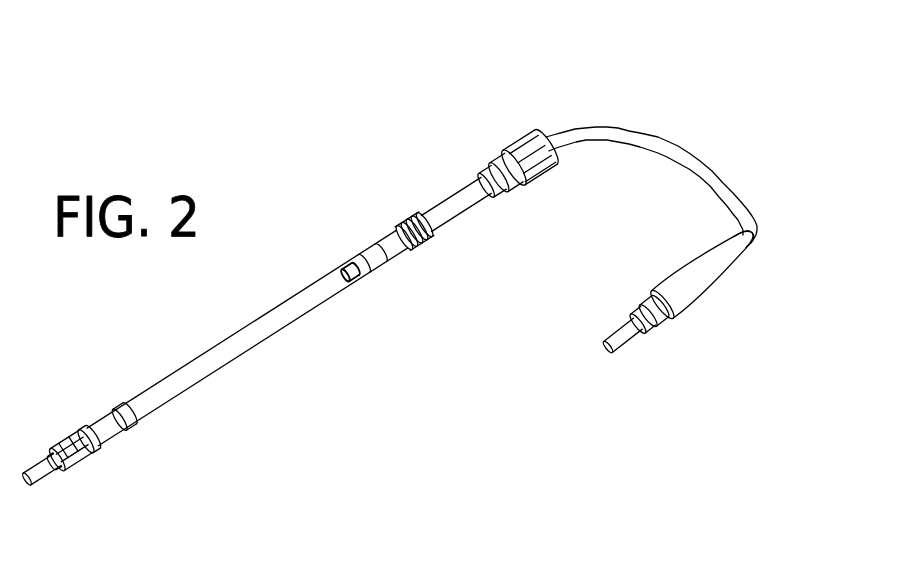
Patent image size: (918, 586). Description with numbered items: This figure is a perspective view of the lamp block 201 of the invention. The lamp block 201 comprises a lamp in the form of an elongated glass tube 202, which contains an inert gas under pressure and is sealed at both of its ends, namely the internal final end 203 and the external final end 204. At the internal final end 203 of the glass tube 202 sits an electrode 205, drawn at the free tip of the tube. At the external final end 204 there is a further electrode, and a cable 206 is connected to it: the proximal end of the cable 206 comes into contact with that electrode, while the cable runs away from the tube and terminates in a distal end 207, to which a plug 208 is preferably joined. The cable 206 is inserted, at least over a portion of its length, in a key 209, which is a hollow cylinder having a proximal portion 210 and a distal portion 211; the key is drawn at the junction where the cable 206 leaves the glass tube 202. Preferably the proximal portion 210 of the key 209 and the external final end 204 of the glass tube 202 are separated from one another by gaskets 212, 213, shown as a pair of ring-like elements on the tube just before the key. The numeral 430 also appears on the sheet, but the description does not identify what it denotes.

The lamp block 201 is at (492, 133).
The glass tube 202 is at (288, 352).
The internal final end 203 is at (97, 456).
The external final end 204 is at (396, 267).
The electrode 205 is at (28, 494).
The cable 206 is at (680, 140).
The distal end 207 is at (758, 242).
The plug 208 is at (708, 308).
The key 209 is at (482, 215).
The proximal portion 210 is at (395, 203).
The distal portion 211 is at (533, 128).
The gasket 212 is at (424, 251).
The gasket 213 is at (413, 253).
The support 430 is at (272, 585).